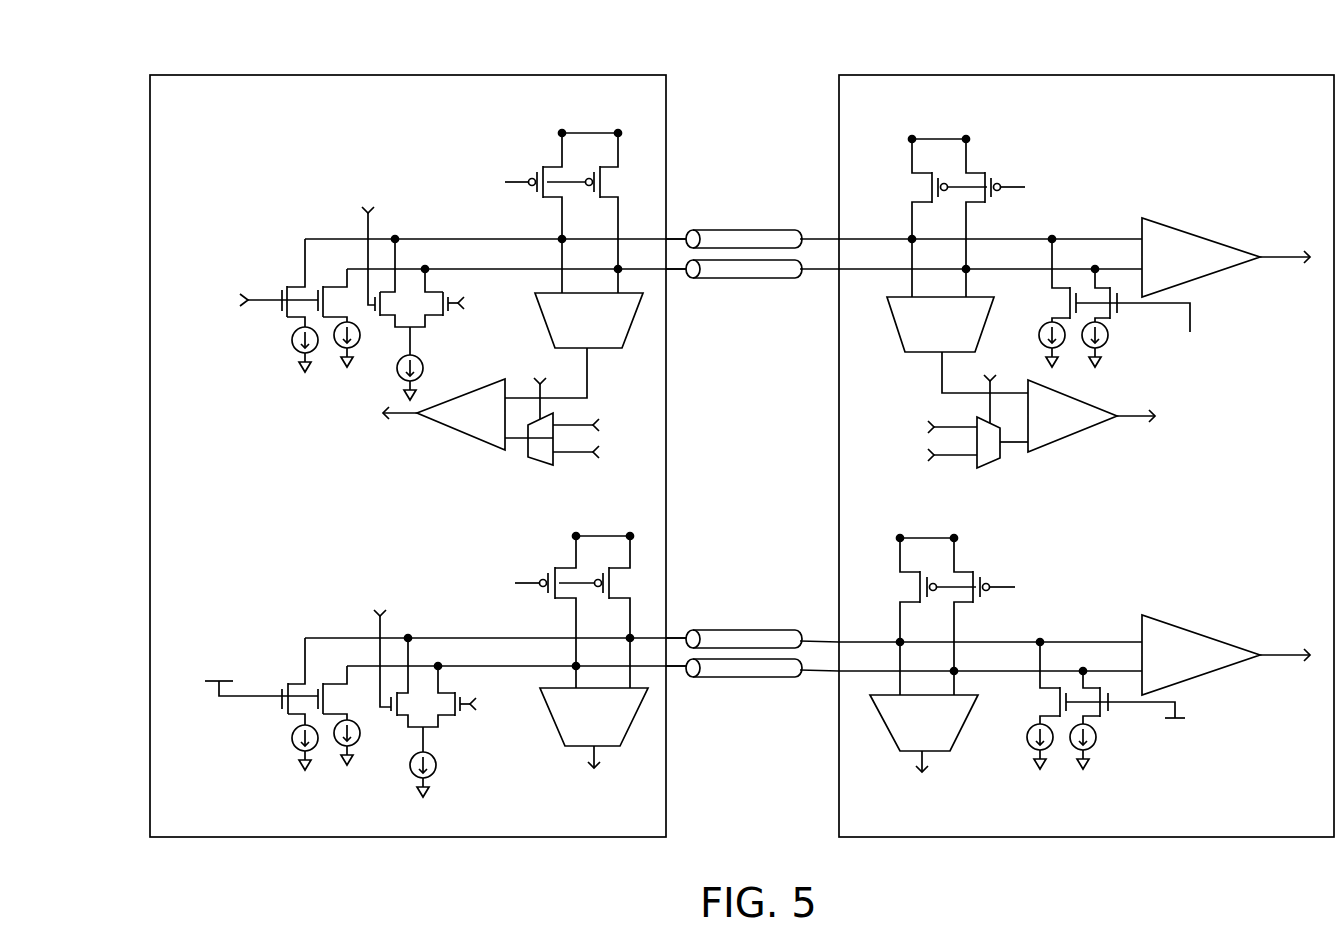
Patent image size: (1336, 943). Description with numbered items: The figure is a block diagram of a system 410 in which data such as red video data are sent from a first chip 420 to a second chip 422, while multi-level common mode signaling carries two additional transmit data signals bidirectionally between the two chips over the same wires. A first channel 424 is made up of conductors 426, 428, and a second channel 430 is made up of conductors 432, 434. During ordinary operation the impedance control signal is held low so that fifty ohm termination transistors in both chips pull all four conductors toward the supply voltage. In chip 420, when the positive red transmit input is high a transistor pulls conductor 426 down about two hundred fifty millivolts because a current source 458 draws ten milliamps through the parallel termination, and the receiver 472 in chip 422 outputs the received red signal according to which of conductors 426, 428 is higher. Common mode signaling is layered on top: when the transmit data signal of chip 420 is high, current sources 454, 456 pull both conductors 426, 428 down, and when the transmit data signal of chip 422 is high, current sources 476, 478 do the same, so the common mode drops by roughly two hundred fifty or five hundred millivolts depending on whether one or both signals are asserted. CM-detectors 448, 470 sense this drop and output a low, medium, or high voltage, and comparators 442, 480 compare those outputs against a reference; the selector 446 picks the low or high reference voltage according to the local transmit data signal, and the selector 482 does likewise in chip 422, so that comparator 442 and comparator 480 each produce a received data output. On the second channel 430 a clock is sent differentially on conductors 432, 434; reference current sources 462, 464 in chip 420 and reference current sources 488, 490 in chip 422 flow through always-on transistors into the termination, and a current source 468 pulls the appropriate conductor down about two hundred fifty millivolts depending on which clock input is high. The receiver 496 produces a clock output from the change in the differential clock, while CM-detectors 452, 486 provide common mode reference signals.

The system 410 is at (383, 852).
The chip 420 is at (248, 112).
The chip 422 is at (1278, 122).
The first channel 424 is at (724, 110).
The conductor 426 is at (700, 262).
The conductor 428 is at (777, 283).
The second channel 430 is at (714, 788).
The conductor 432 is at (700, 661).
The conductor 434 is at (775, 683).
The comparator 442 is at (468, 438).
The selector 446 is at (533, 455).
The CM-detector 448 is at (628, 340).
The CM-detector 452 is at (557, 735).
The current source 454 is at (292, 342).
The current source 456 is at (335, 346).
The current source 458 is at (447, 360).
The reference current source 462 is at (293, 745).
The reference current source 464 is at (338, 745).
The current source 468 is at (436, 763).
The CM-detector 470 is at (900, 330).
The receiver 472 is at (1178, 226).
The current source 476 is at (1043, 345).
The current source 478 is at (1108, 333).
The comparator 480 is at (1100, 426).
The selector 482 is at (993, 462).
The CM-detector 486 is at (892, 740).
The reference current source 488 is at (1030, 745).
The reference current source 490 is at (1097, 740).
The receiver 496 is at (1226, 626).